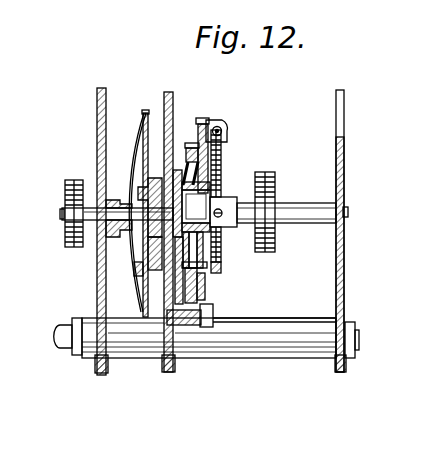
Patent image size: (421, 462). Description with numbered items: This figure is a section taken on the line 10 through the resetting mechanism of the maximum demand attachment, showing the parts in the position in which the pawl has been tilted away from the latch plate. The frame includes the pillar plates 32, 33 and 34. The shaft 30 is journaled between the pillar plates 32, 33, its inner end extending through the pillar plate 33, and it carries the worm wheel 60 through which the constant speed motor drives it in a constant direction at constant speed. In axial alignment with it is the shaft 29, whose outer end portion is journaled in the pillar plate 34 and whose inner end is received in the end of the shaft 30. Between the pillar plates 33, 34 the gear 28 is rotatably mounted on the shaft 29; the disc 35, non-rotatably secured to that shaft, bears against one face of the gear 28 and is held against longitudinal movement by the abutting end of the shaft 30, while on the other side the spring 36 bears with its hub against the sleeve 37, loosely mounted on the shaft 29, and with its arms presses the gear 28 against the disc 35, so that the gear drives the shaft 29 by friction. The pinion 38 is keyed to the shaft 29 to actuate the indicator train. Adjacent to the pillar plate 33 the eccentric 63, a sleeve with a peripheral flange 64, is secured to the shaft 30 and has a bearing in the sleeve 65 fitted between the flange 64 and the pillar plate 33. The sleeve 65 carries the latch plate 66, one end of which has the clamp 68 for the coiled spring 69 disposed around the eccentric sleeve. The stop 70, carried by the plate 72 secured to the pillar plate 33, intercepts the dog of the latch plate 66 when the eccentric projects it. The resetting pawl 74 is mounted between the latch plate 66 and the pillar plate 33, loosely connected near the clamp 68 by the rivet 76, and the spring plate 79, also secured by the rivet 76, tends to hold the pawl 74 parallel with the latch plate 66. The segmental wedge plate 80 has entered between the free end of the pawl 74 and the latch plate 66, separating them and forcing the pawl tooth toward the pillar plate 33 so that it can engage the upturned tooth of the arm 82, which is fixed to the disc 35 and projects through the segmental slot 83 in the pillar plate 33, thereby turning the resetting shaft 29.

The section line 10- 10 is at (228, 120).
The gear 28 is at (145, 113).
The shaft 29 is at (65, 232).
The shaft 30 is at (288, 205).
The pillar plate 32 is at (336, 158).
The pillar plate 33 is at (173, 92).
The pillar plate 34 is at (97, 92).
The disc 35 is at (148, 258).
The spring 36 is at (137, 268).
The sleeve 37 is at (128, 237).
The pinion 38 is at (65, 186).
The worm wheel 60 is at (270, 164).
The eccentric 63 is at (196, 198).
The peripheral flange 64 is at (214, 172).
The sleeve 65 is at (209, 163).
The latch plate 66 is at (201, 124).
The clamp 68 is at (216, 123).
The coiled spring 69 is at (221, 267).
The stop 70 is at (215, 312).
The plate 72 is at (180, 362).
The resetting pawl 74 is at (203, 253).
The rivet 76 is at (191, 143).
The spring plate 79 is at (143, 148).
The wedge plate 80 is at (205, 290).
The arm 82 is at (143, 180).
The segmental slot 83 is at (179, 300).